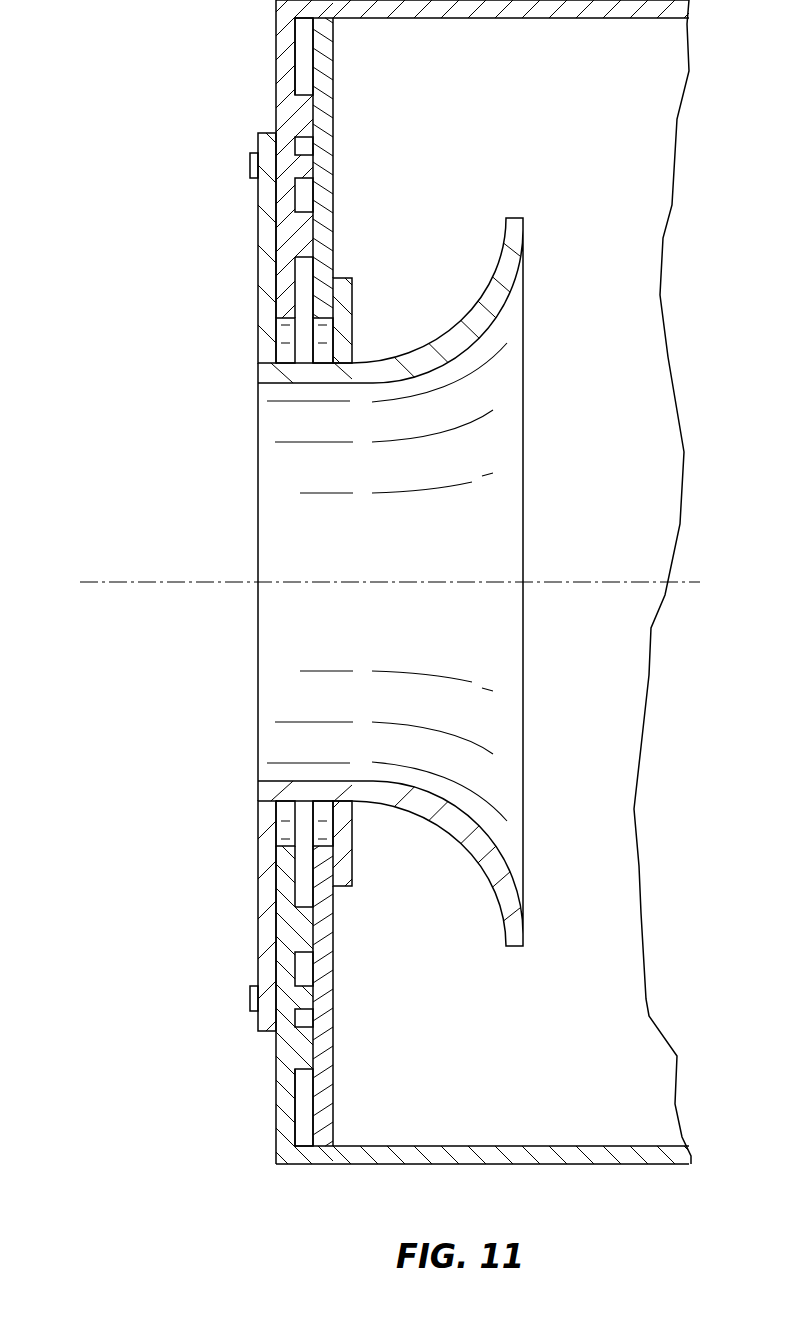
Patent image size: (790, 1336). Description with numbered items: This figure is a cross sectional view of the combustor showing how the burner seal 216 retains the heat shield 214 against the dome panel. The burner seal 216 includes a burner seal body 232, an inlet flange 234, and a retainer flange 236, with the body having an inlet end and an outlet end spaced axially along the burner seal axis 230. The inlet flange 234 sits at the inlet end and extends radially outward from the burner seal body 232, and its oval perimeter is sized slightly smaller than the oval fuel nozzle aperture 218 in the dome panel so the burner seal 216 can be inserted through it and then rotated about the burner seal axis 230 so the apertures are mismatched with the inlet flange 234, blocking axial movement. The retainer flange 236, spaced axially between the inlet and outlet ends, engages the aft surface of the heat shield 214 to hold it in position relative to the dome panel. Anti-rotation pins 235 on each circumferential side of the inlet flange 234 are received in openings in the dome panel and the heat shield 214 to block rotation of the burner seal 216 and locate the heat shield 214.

The heat shield 214 is at (362, 134).
The burner seal 216 is at (232, 485).
The fuel nozzle aperture 218 is at (272, 340).
The burner seal axis 230 is at (162, 582).
The burner seal body 232 is at (343, 373).
The inlet flange 234 is at (268, 245).
The anti-rotation pins 235 is at (250, 163).
The retainer flange 236 is at (342, 303).